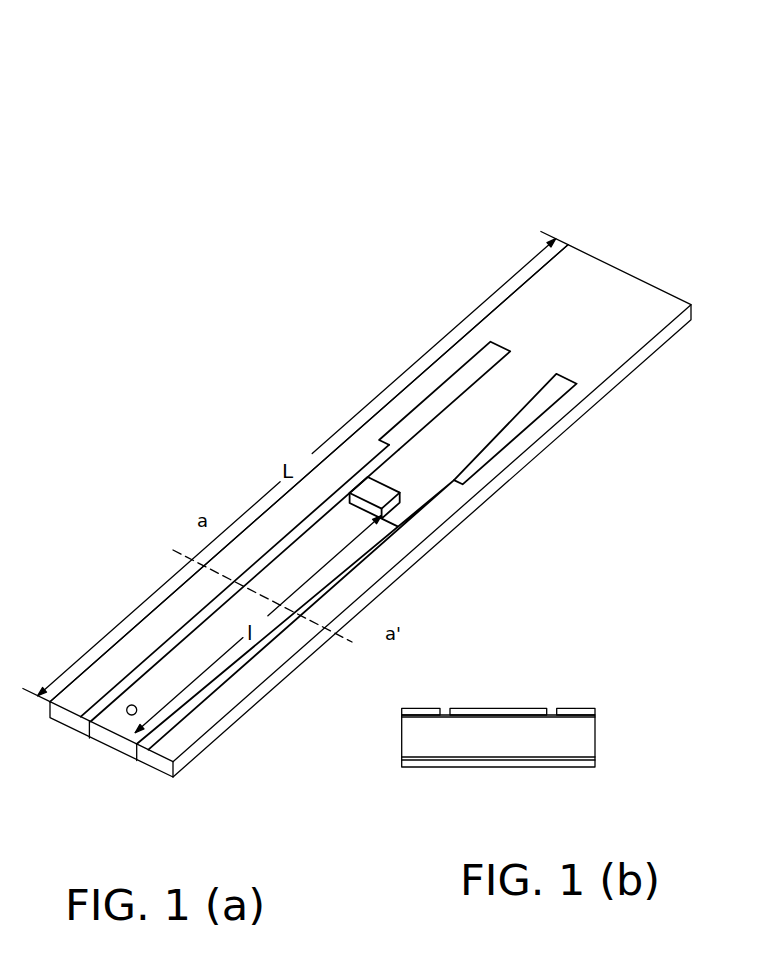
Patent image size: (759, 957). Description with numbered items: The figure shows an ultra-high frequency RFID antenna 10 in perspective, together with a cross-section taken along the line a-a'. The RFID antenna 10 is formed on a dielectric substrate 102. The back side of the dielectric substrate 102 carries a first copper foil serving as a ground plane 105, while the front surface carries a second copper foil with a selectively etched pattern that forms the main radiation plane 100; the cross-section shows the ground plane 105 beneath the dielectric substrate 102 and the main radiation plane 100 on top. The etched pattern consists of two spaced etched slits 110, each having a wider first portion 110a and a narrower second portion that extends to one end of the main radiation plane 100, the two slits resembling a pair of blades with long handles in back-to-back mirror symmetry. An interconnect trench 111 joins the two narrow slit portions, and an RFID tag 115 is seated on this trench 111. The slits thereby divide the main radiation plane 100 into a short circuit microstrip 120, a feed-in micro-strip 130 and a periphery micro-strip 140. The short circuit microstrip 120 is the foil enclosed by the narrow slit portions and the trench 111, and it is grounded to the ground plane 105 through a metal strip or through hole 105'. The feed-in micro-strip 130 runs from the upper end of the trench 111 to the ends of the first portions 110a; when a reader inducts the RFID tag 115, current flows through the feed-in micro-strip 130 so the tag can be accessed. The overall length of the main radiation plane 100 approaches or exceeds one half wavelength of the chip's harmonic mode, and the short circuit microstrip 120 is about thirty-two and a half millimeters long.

The RFID antenna 10 is at (548, 185).
The main radiation plane 100 is at (583, 713).
The dielectric substrate 102 is at (478, 748).
The ground plane 105 is at (544, 740).
The metal strip or through hole 105' is at (370, 583).
The etched slits 110 is at (660, 493).
The first portion 110a is at (457, 467).
The interconnect trench 111 is at (362, 493).
The RFID tag 115 is at (383, 497).
The short circuit microstrip 120 is at (168, 690).
The feed-in micro-strip 130 is at (476, 412).
The periphery micro-strip 140 is at (145, 635).